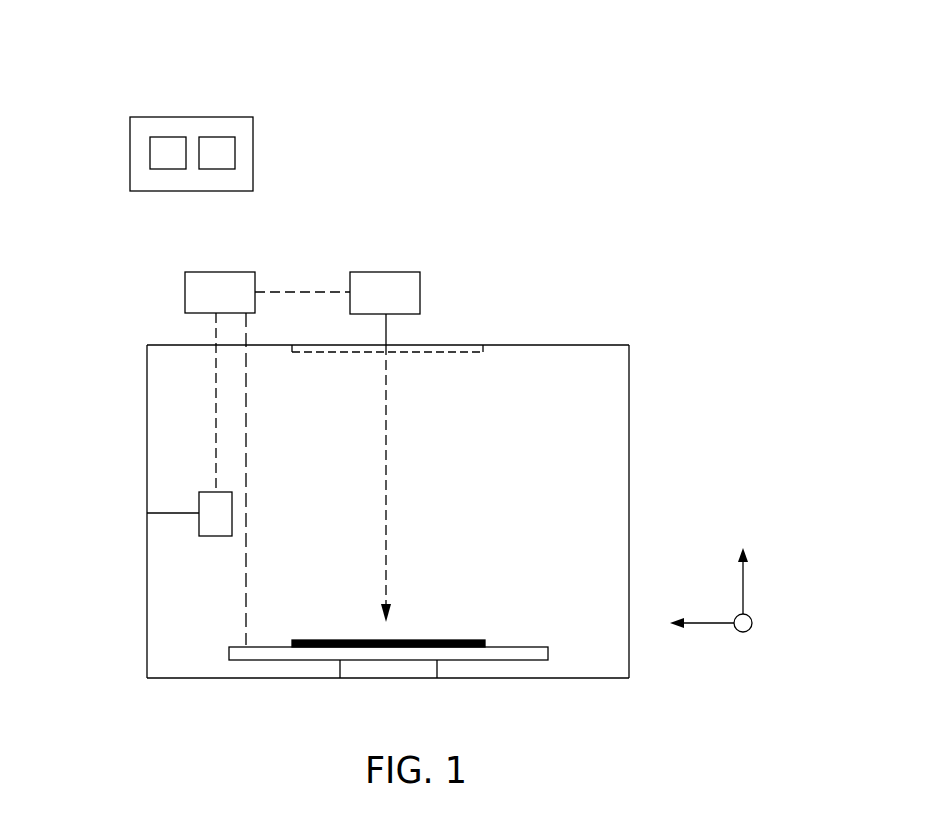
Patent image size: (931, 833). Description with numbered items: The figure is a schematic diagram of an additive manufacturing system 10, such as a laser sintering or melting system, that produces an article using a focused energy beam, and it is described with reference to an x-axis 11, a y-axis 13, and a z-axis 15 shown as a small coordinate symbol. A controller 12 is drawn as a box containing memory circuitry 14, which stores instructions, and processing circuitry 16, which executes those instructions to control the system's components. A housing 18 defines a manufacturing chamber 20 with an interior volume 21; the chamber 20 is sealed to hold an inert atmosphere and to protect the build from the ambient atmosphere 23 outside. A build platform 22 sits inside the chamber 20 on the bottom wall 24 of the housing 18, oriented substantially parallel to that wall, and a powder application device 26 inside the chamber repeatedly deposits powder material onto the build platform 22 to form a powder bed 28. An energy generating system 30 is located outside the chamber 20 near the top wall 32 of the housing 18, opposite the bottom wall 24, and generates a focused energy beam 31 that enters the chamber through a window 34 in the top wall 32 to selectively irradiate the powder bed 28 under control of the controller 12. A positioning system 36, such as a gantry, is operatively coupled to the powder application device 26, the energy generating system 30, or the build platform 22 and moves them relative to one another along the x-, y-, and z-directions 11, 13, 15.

The additive manufacturing system 10 is at (150, 54).
The controller 12 is at (195, 117).
The memory circuitry 14 is at (150, 152).
The processing circuitry 16 is at (235, 150).
The housing 18 is at (629, 412).
The manufacturing chamber 20 is at (515, 382).
The interior volume 21 is at (519, 490).
The build platform 22 is at (524, 647).
The ambient atmosphere 23 is at (652, 296).
The bottom wall 24 is at (573, 678).
The powder application device 26 is at (210, 537).
The powder bed 28 is at (460, 640).
The energy generating system 30 is at (386, 272).
The focused energy beam 31 is at (387, 502).
The top wall 32 is at (563, 345).
The window 34 is at (452, 345).
The positioning system 36 is at (185, 290).
The x-axis 11 is at (712, 620).
The y-axis 13 is at (745, 633).
The z-axis 15 is at (745, 580).